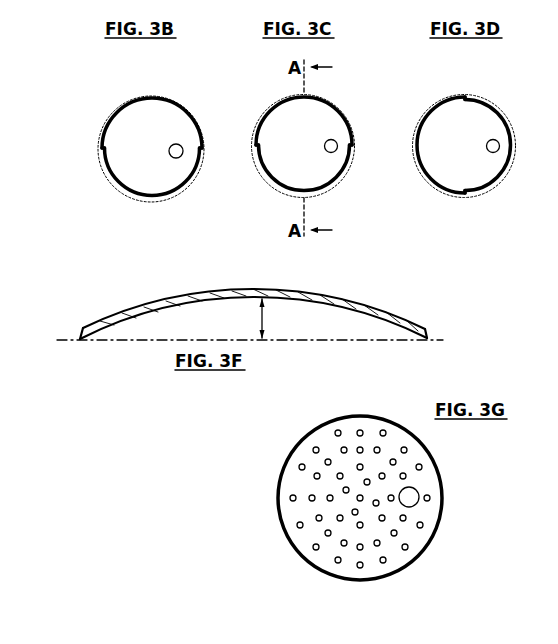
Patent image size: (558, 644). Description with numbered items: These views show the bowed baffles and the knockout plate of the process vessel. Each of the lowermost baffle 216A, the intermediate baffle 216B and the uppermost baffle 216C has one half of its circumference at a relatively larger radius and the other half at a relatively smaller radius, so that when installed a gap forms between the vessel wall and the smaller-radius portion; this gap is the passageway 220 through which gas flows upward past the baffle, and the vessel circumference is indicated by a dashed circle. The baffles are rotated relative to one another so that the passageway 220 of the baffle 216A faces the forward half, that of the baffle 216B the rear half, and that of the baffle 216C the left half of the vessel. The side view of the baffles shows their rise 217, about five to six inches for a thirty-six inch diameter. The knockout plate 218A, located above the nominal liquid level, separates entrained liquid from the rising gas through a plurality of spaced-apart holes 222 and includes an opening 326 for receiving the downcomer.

In FIG. 3B, the lowermost baffle 216A is at (132, 128).
In FIG. 3F, the lowermost baffle 216A is at (217, 305).
In FIG. 3C, the intermediate baffle 216B is at (287, 180).
In FIG. 3F, the intermediate baffle 216B is at (217, 305).
In FIG. 3D, the uppermost baffle 216C is at (480, 175).
In FIG. 3F, the uppermost baffle 216C is at (122, 313).
In FIG. 3F, the rise 217 is at (266, 310).
In FIG. 3G, the knockout plate 218A is at (343, 498).
In FIG. 3B, the passageway 220 is at (112, 185).
In FIG. 3C, the passageway 220 is at (335, 100).
In FIG. 3D, the passageway 220 is at (432, 185).
In FIG. 3G, the holes 222 is at (397, 460).
In FIG. 3G, the opening 326 is at (417, 503).